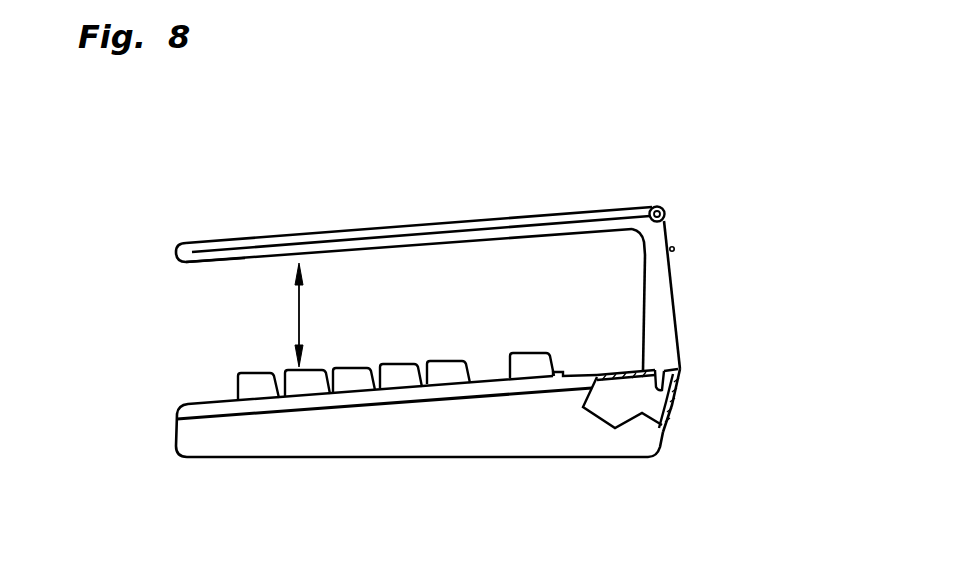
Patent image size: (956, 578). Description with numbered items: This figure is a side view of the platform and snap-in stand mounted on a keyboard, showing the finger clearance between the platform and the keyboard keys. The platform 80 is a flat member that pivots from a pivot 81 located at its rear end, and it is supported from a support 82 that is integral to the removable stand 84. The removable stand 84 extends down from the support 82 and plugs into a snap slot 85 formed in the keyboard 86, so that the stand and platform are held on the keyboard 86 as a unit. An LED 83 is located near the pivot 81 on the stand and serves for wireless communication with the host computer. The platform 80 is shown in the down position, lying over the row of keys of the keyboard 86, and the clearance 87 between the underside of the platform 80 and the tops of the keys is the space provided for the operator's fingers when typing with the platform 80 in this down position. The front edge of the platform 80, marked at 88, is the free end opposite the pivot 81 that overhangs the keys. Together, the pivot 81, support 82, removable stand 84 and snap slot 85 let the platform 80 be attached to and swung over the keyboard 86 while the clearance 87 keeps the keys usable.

The platform 80 is at (377, 228).
The pivot 81 is at (664, 206).
The support 82 is at (645, 235).
The LED 83 is at (674, 248).
The removable stand 84 is at (661, 340).
The snap slot 85 is at (676, 372).
The keyboard 86 is at (277, 430).
The clearance 87 is at (298, 315).
The lid front edge 88 is at (247, 260).